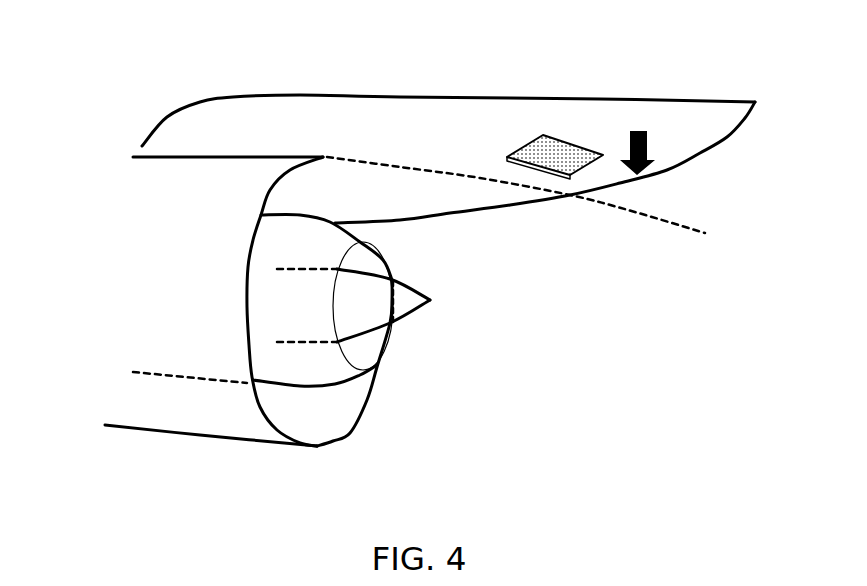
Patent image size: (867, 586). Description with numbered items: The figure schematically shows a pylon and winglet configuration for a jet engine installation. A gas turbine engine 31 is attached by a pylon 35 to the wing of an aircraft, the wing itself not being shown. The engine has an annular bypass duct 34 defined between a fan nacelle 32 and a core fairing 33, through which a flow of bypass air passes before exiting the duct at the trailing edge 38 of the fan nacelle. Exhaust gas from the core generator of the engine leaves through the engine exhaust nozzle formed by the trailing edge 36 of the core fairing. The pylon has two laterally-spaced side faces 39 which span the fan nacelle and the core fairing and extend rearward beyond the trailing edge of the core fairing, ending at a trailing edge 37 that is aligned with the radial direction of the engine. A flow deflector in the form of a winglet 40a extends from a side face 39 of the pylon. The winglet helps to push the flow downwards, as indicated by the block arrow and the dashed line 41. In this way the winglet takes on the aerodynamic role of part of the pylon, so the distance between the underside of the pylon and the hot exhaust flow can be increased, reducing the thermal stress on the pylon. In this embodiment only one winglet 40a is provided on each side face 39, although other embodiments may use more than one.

The gas turbine engine 31 is at (80, 116).
The fan nacelle 32 is at (183, 398).
The core fairing 33 is at (330, 378).
The annular bypass duct 34 is at (304, 327).
The pylon 35 is at (490, 83).
The trailing edge of the core fairing 36 is at (362, 366).
The trailing edge of the pylon 37 is at (725, 137).
The trailing edge of the fan nacelle 38 is at (255, 380).
The side face 39 is at (411, 143).
The winglet 40a is at (555, 137).
The dashed line 41 is at (628, 210).